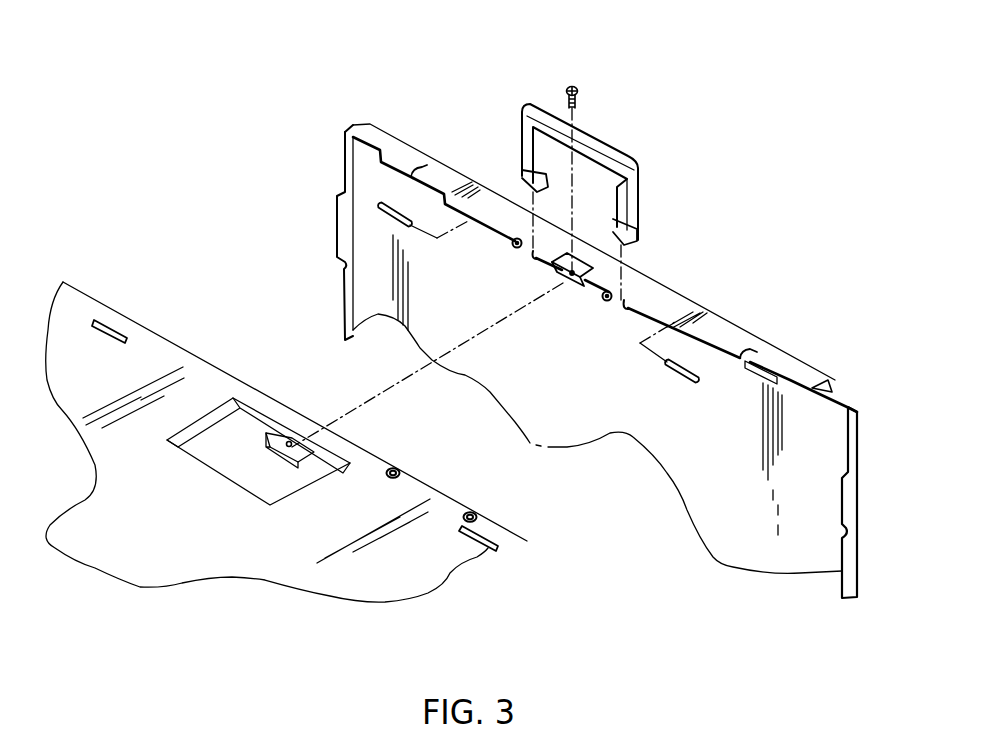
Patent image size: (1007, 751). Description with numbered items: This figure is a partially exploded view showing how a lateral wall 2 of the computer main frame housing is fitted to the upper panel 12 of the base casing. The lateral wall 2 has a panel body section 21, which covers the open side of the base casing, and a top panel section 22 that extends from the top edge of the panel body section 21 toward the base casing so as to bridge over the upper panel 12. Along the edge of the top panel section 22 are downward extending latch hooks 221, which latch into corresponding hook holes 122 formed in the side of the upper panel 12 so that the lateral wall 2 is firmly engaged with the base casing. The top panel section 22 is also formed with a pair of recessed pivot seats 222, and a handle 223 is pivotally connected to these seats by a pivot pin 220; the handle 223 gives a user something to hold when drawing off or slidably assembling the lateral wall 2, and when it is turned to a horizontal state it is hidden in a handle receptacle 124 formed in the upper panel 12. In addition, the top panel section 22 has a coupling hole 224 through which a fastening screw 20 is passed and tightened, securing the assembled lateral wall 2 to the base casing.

The lateral wall 2 is at (664, 280).
The upper panel 12 is at (326, 576).
The fastening screw 20 is at (576, 84).
The panel body section 21 is at (793, 442).
The top panel section 22 is at (474, 188).
The hook hole 122 is at (107, 327).
The handle receptacle 124 is at (240, 430).
The pivot pin 220 is at (380, 208).
The latch hook 221 is at (392, 152).
The recessed pivot seats 222 is at (519, 236).
The handle 223 is at (607, 153).
The coupling hole 224 is at (571, 282).